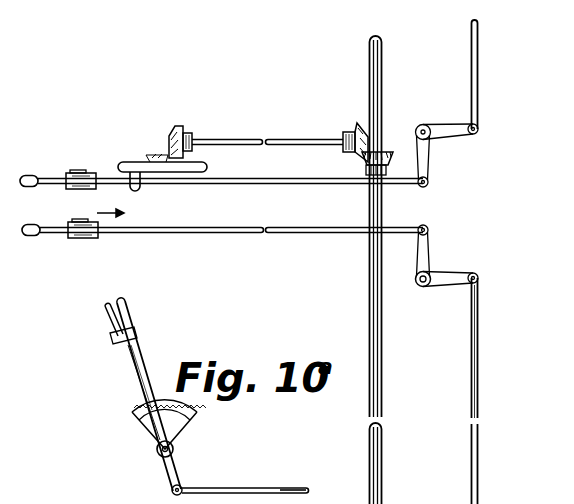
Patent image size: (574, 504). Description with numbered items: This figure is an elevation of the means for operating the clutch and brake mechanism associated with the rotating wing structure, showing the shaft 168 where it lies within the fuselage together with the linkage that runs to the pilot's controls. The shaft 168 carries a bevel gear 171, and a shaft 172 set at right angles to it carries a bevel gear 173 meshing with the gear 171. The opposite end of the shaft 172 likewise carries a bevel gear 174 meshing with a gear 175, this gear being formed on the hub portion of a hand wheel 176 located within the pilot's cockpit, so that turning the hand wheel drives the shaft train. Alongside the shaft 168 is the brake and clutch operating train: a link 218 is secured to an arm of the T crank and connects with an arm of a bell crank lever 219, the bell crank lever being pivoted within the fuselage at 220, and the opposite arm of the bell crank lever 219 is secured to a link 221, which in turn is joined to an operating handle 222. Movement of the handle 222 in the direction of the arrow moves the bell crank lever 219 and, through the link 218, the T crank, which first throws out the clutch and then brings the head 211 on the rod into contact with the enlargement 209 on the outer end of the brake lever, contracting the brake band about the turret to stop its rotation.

The main vertical shaft 168 is at (369, 297).
The bevel gear 171 is at (389, 153).
The shaft 172 is at (247, 138).
The bevel gear 173 is at (357, 133).
The bevel gear 174 is at (178, 130).
The gear 175 is at (155, 160).
The hand wheel 176 is at (126, 164).
The link 218 is at (478, 465).
The bell crank lever 219 is at (433, 270).
The pivot 220 is at (424, 287).
The link 221 is at (254, 234).
The operating handle 222 is at (65, 234).
The head 211 is at (283, 490).
The enlargement 209 is at (342, 499).